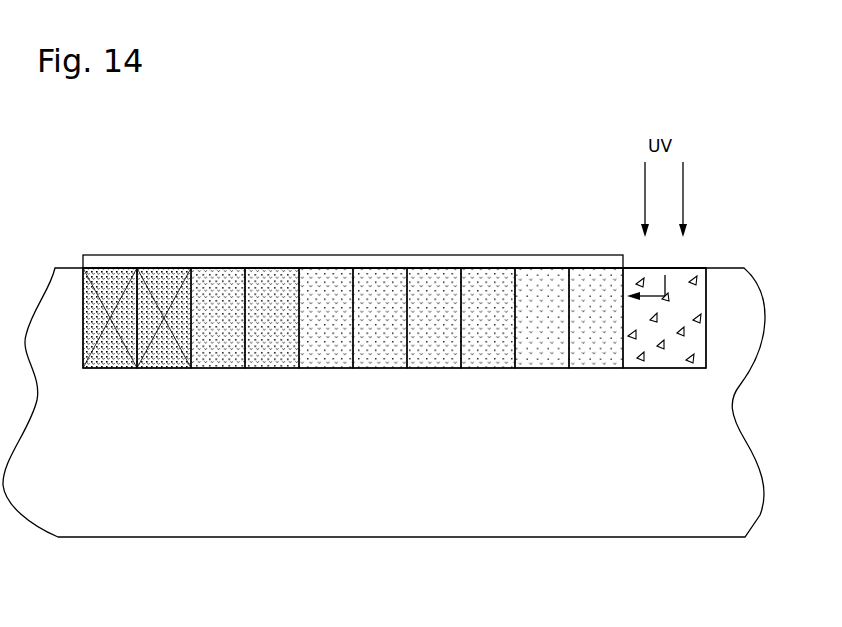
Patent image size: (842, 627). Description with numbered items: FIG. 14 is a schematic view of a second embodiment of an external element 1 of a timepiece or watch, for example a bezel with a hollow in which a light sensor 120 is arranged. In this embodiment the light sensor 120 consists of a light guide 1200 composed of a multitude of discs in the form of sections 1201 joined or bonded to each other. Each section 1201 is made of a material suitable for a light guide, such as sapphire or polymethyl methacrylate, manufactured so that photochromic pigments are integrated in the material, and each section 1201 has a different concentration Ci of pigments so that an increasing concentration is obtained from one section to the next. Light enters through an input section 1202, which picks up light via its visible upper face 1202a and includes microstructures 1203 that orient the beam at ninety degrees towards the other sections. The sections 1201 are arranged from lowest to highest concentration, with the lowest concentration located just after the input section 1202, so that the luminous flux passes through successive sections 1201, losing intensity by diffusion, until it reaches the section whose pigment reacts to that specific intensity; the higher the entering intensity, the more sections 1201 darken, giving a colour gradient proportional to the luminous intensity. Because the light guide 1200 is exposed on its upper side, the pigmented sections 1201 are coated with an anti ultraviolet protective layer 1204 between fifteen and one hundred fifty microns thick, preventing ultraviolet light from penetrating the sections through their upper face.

The external element 1 is at (726, 180).
The light sensor 120 is at (195, 202).
The light guide 1200 is at (374, 404).
The section 1201 is at (123, 365).
The input section 1202 is at (666, 355).
The upper face 1202a is at (686, 268).
The microstructures 1203 is at (692, 357).
The anti ultraviolet protective layer 1204 is at (265, 262).
The concentration of photochromic pigments Ci is at (598, 352).